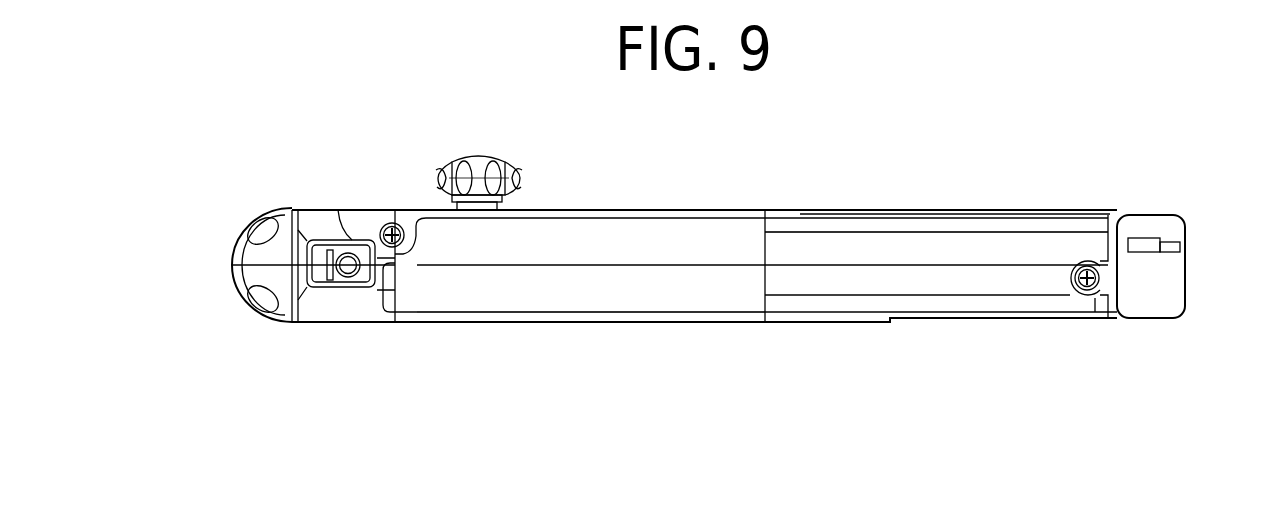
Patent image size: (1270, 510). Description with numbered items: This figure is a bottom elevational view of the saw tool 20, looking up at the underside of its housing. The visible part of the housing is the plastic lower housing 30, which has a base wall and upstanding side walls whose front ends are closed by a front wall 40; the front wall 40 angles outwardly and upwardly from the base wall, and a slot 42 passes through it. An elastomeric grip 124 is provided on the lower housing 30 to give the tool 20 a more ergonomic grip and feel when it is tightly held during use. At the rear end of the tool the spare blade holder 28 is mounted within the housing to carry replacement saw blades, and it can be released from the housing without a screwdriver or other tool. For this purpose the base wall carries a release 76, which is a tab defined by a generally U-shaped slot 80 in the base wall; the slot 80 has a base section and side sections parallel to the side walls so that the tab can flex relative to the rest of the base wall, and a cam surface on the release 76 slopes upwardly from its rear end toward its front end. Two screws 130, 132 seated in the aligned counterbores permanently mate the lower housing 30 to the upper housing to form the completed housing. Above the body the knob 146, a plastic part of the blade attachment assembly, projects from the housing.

The saw tool 20 is at (741, 165).
The spare blade holder 28 is at (228, 298).
The lower housing 30 is at (877, 245).
The front wall 40 is at (1168, 280).
The slot 42 is at (1147, 240).
The release 76 is at (358, 290).
The U-shaped slot 80 is at (347, 238).
The elastomeric grip 124 is at (580, 298).
The screw 130 is at (1093, 297).
The screw 132 is at (392, 222).
The knob 146 is at (480, 163).